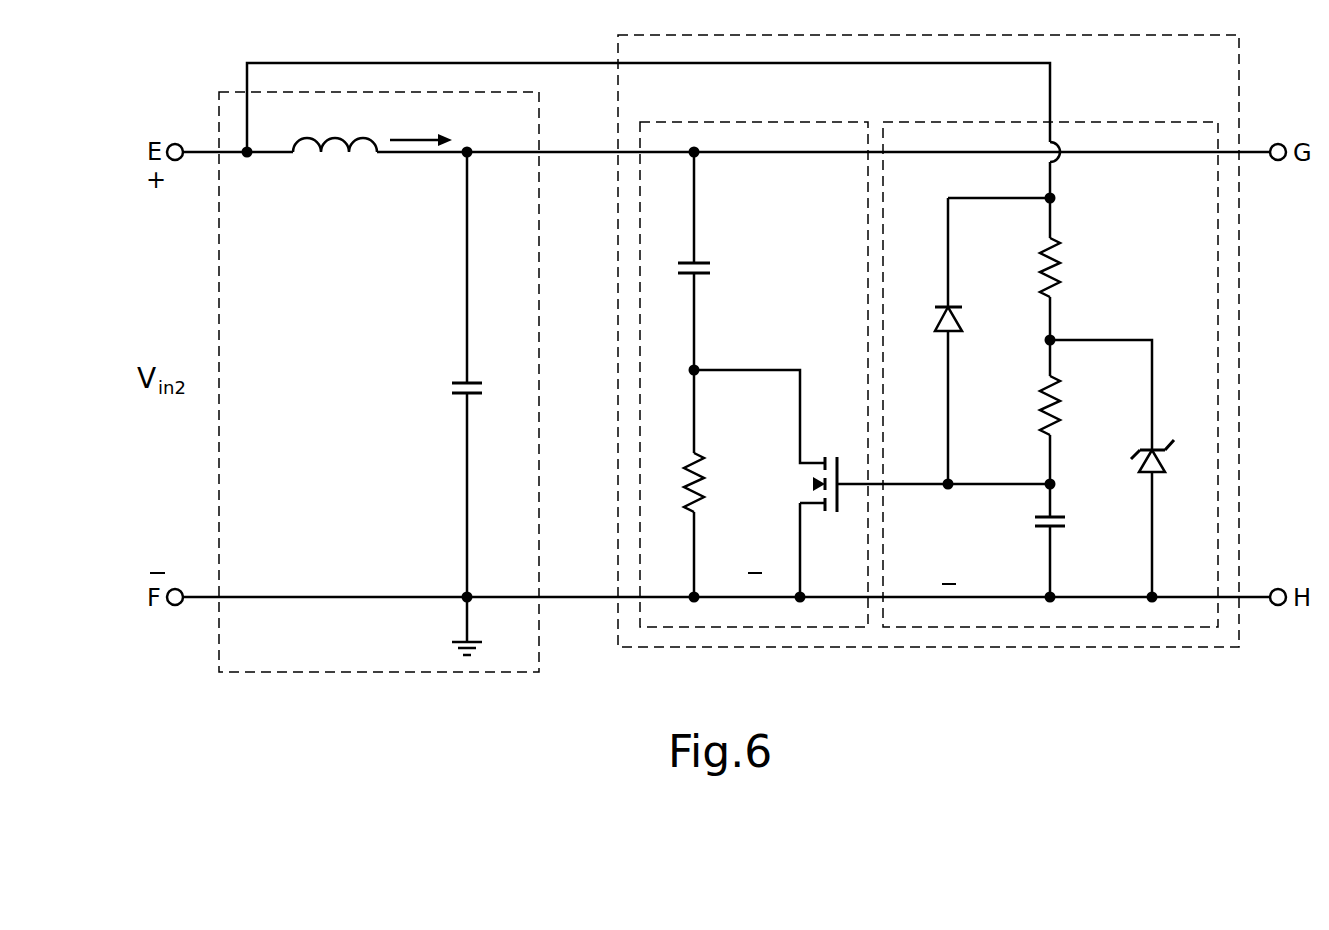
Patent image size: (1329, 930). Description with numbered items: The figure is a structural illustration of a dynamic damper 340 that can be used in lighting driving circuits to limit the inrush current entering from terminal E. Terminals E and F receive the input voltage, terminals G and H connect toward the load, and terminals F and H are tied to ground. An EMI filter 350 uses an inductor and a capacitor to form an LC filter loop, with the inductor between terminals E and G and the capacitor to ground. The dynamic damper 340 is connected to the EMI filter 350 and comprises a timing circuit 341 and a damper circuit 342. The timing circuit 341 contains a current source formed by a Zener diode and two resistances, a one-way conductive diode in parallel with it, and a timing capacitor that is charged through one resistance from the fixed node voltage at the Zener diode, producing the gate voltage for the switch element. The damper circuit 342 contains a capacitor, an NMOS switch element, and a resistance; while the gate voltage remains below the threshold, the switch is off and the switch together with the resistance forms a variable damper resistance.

The dynamic damper 340 is at (1070, 647).
The timing circuit 341 is at (1125, 122).
The damper circuit 342 is at (772, 122).
The EMI filter 350 is at (424, 672).